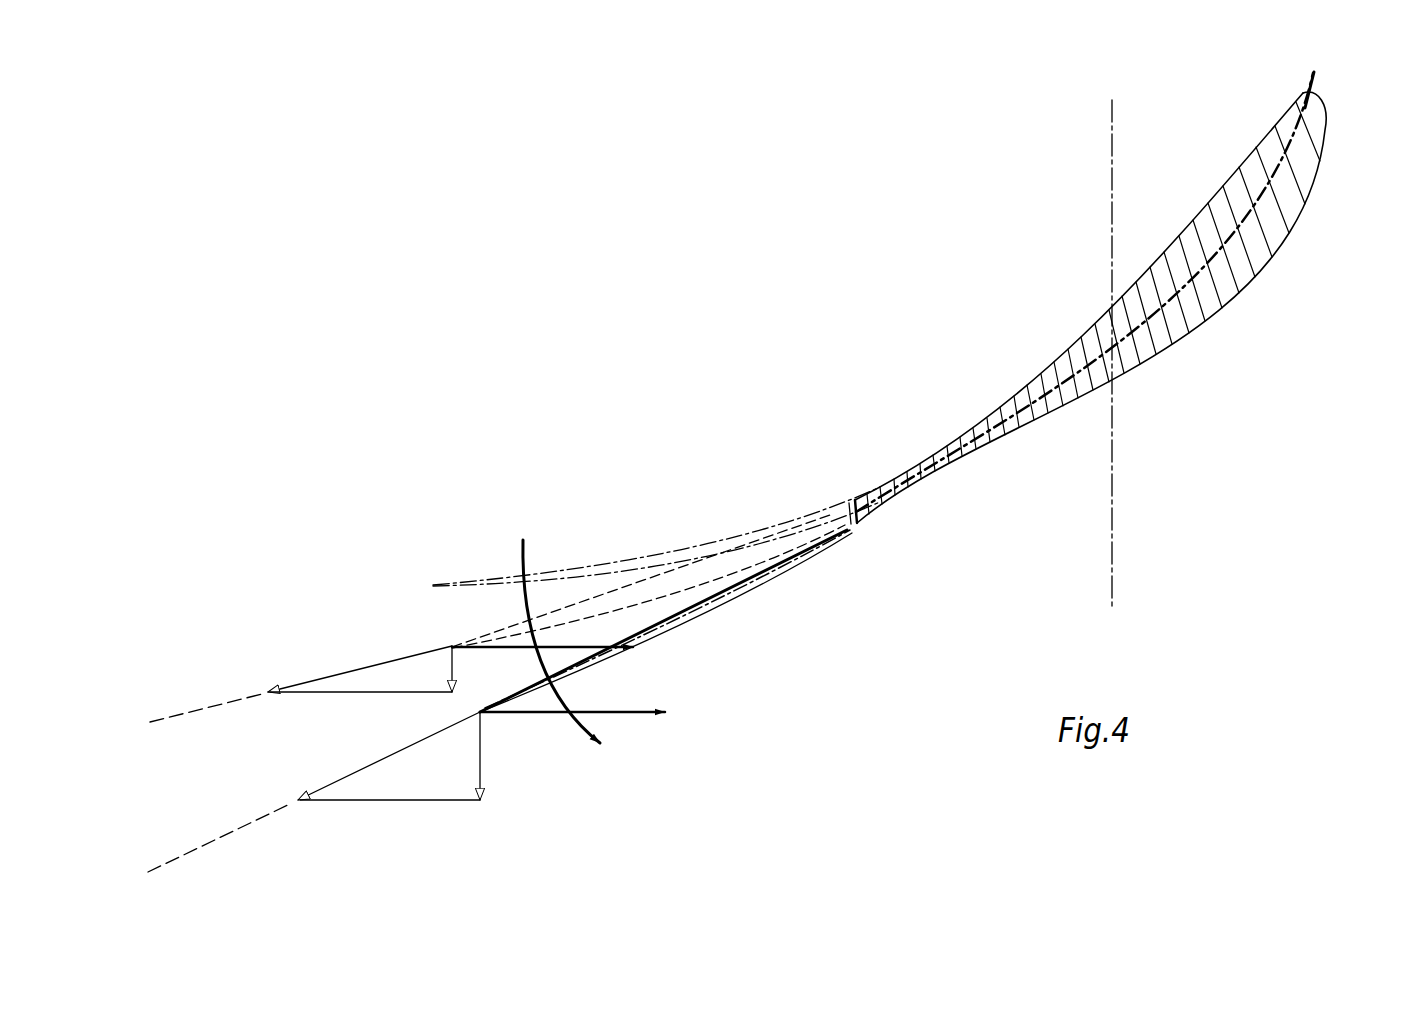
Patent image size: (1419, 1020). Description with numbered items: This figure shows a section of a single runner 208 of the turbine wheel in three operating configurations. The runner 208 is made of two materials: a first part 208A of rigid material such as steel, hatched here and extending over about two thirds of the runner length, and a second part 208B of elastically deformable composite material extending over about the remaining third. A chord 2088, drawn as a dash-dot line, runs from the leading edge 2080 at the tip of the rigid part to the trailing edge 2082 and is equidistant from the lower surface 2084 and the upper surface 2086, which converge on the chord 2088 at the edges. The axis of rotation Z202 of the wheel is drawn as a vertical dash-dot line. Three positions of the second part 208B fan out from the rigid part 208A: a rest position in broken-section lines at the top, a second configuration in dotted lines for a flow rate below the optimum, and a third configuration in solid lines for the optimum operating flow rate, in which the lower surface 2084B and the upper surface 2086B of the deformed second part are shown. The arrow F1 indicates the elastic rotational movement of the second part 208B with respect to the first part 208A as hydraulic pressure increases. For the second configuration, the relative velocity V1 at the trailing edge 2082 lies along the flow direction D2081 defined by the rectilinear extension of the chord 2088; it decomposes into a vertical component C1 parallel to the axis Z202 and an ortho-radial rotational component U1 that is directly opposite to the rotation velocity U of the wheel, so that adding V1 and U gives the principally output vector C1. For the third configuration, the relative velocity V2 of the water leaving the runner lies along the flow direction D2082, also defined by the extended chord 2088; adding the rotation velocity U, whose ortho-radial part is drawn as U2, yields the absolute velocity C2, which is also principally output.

The runner 208 is at (968, 156).
The first part 208A is at (1185, 258).
The second part 208B is at (800, 530).
The leading edge 2080 is at (1314, 92).
The trailing edge 2082 is at (432, 583).
The lower surface 2084 is at (1083, 328).
The leading edge at section B 2084B is at (647, 623).
The upper surface 2086 is at (1223, 319).
The trailing edge at section B 2086B is at (719, 614).
The chord 2088 is at (1054, 388).
The axis of rotation Z202 is at (1135, 355).
The direction of flow for the second configuration D2081 is at (301, 696).
The direction of flow for the third configuration D2082 is at (314, 792).
The velocity vector of the flow in the second configuration V1 is at (286, 679).
The rotational component U1 is at (361, 708).
The vertical component C1 is at (462, 669).
The relative velocity vector of water leaving the runner in the third configuration V2 is at (316, 771).
The velocity component U2 is at (390, 813).
The absolute velocity vector C2 is at (491, 756).
The velocity vector of rotation of the wheel U is at (560, 669).
The arrow F1 is at (573, 648).